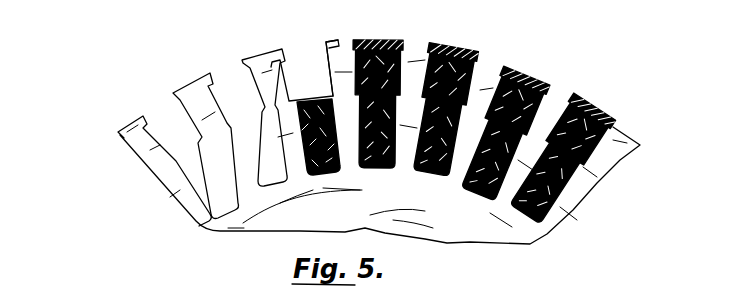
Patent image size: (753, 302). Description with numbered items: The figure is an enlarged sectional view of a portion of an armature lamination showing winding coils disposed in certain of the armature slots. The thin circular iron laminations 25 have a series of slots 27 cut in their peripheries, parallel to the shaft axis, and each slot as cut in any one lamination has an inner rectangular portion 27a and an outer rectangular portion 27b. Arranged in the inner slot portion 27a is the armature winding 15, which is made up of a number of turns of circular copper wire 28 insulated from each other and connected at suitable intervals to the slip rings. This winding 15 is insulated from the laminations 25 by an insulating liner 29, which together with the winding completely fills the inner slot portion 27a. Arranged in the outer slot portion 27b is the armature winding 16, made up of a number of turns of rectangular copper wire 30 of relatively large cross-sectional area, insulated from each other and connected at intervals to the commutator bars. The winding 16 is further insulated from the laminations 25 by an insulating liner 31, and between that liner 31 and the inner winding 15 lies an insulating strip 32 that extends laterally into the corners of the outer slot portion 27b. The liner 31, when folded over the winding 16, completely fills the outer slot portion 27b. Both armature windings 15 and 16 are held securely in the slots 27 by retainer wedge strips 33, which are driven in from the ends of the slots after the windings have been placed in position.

The armature winding 15 is at (308, 93).
The armature winding 16 is at (376, 43).
The laminations 25 is at (137, 152).
The slots 27 is at (157, 106).
The inner rectangular portion 27a is at (235, 225).
The outer rectangular portion 27b is at (233, 97).
The circular copper wire 28 is at (317, 173).
The insulating liner 29 is at (337, 90).
The rectangular copper wire 30 is at (428, 48).
The insulating liner 31 is at (483, 71).
The insulating strip 32 is at (463, 112).
The retainer wedge strips 33 is at (590, 111).